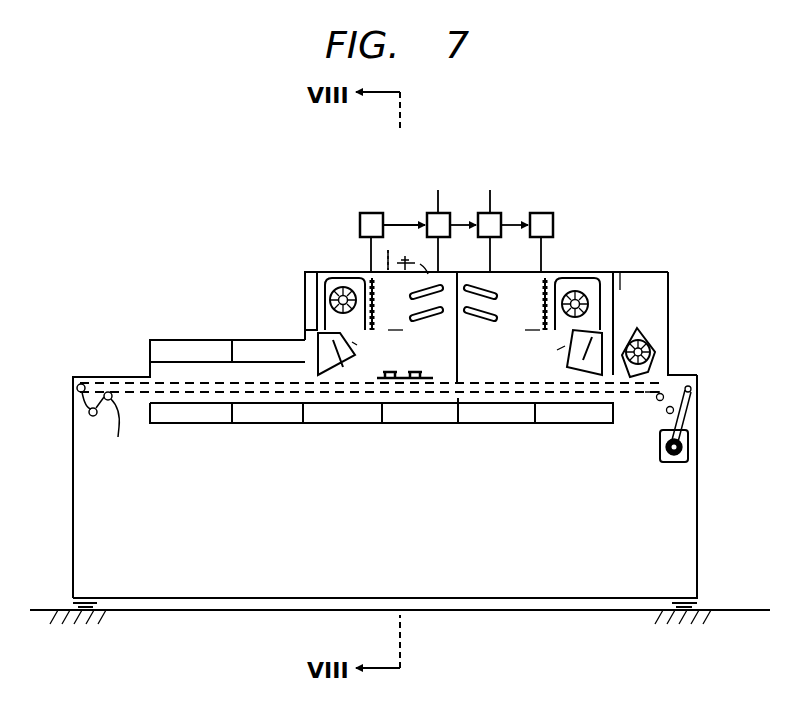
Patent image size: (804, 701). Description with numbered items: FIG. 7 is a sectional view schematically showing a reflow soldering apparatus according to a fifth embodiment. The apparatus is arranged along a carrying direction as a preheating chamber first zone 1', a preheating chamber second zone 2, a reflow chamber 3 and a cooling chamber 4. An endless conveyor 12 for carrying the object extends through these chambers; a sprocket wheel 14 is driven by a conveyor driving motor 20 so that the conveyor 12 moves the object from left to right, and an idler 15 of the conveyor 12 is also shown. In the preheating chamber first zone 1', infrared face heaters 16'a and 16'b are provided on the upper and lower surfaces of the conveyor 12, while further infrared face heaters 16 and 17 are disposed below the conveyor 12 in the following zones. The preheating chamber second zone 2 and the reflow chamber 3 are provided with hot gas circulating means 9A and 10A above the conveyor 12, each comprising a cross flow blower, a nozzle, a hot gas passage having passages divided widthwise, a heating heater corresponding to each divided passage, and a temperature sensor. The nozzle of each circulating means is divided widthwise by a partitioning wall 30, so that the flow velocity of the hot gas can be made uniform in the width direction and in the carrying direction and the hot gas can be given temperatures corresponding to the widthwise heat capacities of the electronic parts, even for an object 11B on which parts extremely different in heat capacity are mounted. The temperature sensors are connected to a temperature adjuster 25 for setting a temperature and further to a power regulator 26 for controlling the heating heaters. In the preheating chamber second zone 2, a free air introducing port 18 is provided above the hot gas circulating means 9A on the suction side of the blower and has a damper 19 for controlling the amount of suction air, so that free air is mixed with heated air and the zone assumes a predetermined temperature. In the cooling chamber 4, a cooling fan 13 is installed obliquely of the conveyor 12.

The preheating chamber first zone 1' is at (385, 429).
The preheating chamber second zone 2 is at (301, 304).
The reflow chamber 3 is at (614, 277).
The cooling chamber 4 is at (670, 278).
The hot gas circulating means 9A is at (345, 178).
The hot gas circulating means 10A is at (633, 178).
The object to be treated 11B is at (433, 376).
The conveyor 12 is at (83, 383).
The cooling fan 13 is at (651, 340).
The sprocket wheel 14 is at (691, 388).
The idler 15 is at (80, 384).
The infrared face heater 16 is at (420, 440).
The infrared face heater 16'a is at (227, 322).
The infrared face heater 16'b is at (266, 448).
The infrared face heater 17 is at (511, 418).
The free air introducing port 18 is at (420, 268).
The damper 19 is at (410, 250).
The conveyor driving motor 20 is at (673, 462).
The temperature adjuster 25 is at (372, 212).
The power regulator 26 is at (478, 210).
The partitioning wall 30 is at (356, 345).